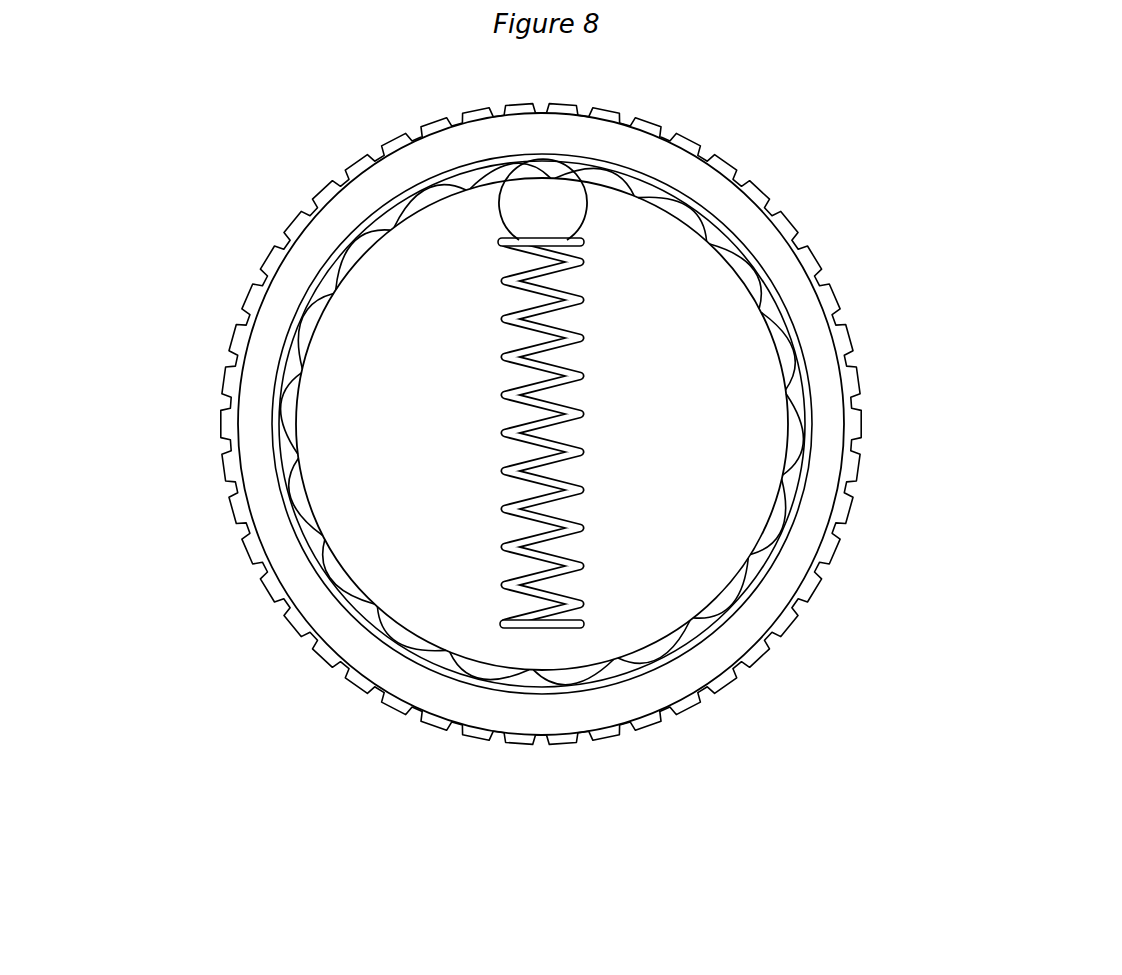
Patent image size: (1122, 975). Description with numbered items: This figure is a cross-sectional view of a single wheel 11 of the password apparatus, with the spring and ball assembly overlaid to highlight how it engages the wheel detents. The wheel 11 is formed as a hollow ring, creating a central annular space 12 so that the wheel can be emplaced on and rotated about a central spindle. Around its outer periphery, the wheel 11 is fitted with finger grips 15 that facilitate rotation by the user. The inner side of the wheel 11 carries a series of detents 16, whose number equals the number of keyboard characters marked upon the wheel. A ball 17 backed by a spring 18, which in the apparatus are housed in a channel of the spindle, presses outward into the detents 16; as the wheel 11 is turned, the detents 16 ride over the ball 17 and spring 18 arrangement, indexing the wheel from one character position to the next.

The wheel 11 is at (410, 760).
The central annular space 12 is at (662, 387).
The finger grips 15 is at (723, 697).
The detents 16 is at (762, 545).
The ball 17 is at (540, 200).
The spring 18 is at (512, 447).